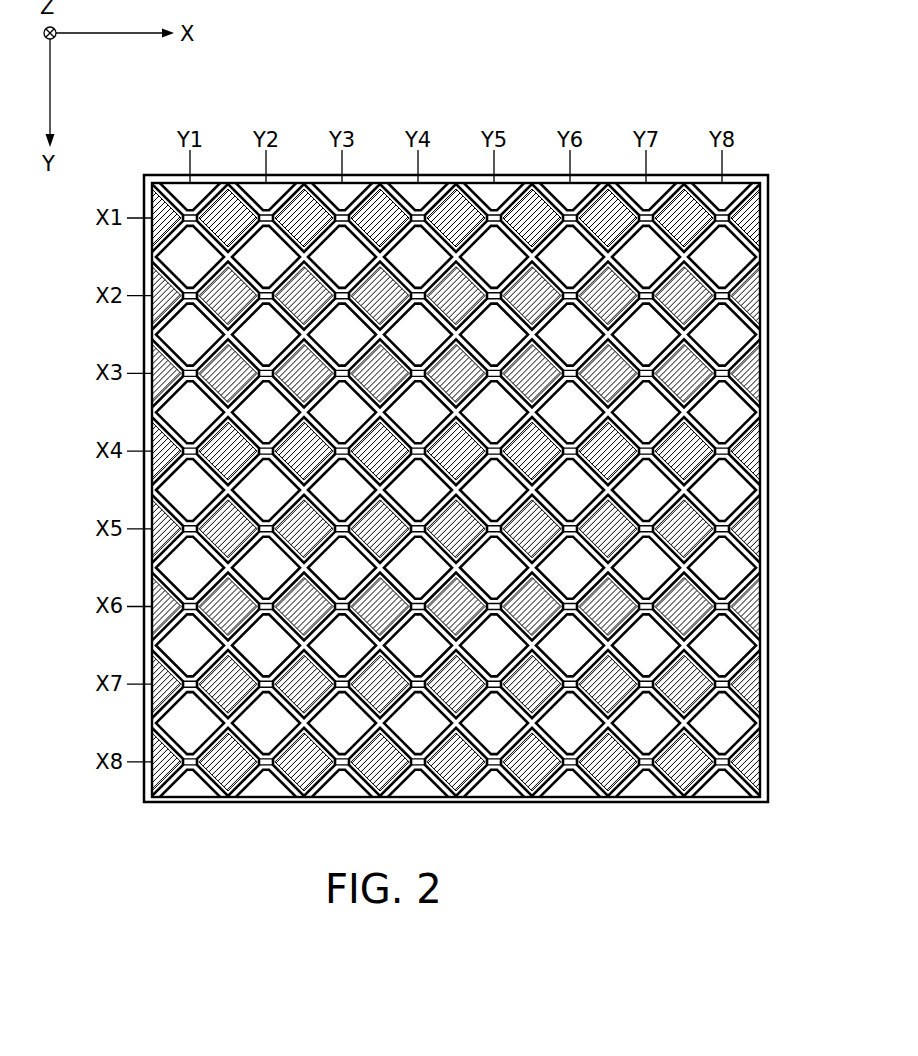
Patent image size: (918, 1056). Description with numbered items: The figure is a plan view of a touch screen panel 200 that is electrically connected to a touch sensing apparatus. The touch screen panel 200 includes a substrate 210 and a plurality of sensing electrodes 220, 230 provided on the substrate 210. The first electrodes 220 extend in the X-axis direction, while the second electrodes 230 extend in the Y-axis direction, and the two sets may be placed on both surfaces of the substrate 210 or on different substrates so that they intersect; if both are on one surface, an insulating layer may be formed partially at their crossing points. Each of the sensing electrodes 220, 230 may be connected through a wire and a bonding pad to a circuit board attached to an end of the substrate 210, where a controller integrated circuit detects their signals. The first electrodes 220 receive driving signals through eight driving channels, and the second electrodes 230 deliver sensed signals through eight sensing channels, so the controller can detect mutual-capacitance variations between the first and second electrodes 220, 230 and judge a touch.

The touch screen panel 200 is at (556, 82).
The substrate 210 is at (146, 176).
The first electrodes 220 is at (150, 233).
The second electrodes 230 is at (201, 190).